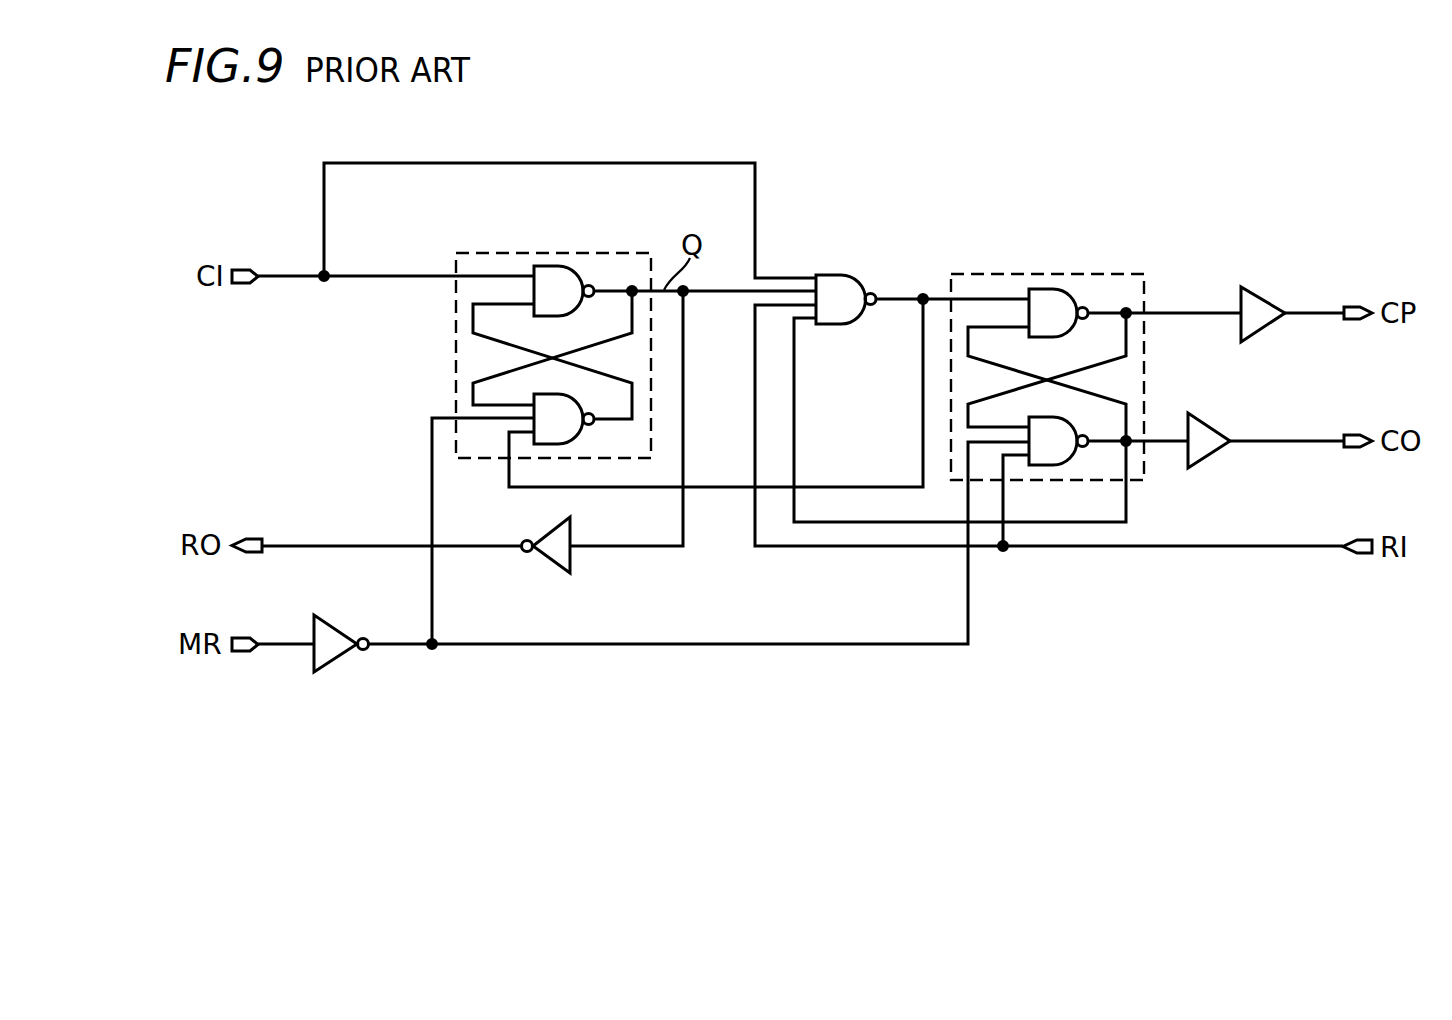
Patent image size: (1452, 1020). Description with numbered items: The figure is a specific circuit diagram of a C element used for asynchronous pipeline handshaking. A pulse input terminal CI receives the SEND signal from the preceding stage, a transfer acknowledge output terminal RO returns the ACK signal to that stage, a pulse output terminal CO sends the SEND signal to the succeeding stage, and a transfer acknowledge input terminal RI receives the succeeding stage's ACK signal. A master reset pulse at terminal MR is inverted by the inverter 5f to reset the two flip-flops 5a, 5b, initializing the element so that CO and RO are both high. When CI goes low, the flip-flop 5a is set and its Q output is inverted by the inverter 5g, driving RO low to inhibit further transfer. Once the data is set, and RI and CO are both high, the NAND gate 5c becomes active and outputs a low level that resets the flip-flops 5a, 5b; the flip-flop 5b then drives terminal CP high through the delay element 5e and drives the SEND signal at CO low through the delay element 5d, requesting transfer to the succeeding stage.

The flip-flop 5a is at (591, 251).
The flip-flop 5b is at (1084, 274).
The NAND gate 5c is at (833, 275).
The delay element 5d is at (1206, 424).
The delay element 5e is at (1258, 296).
The inverter 5f is at (335, 626).
The inverter 5g is at (540, 565).